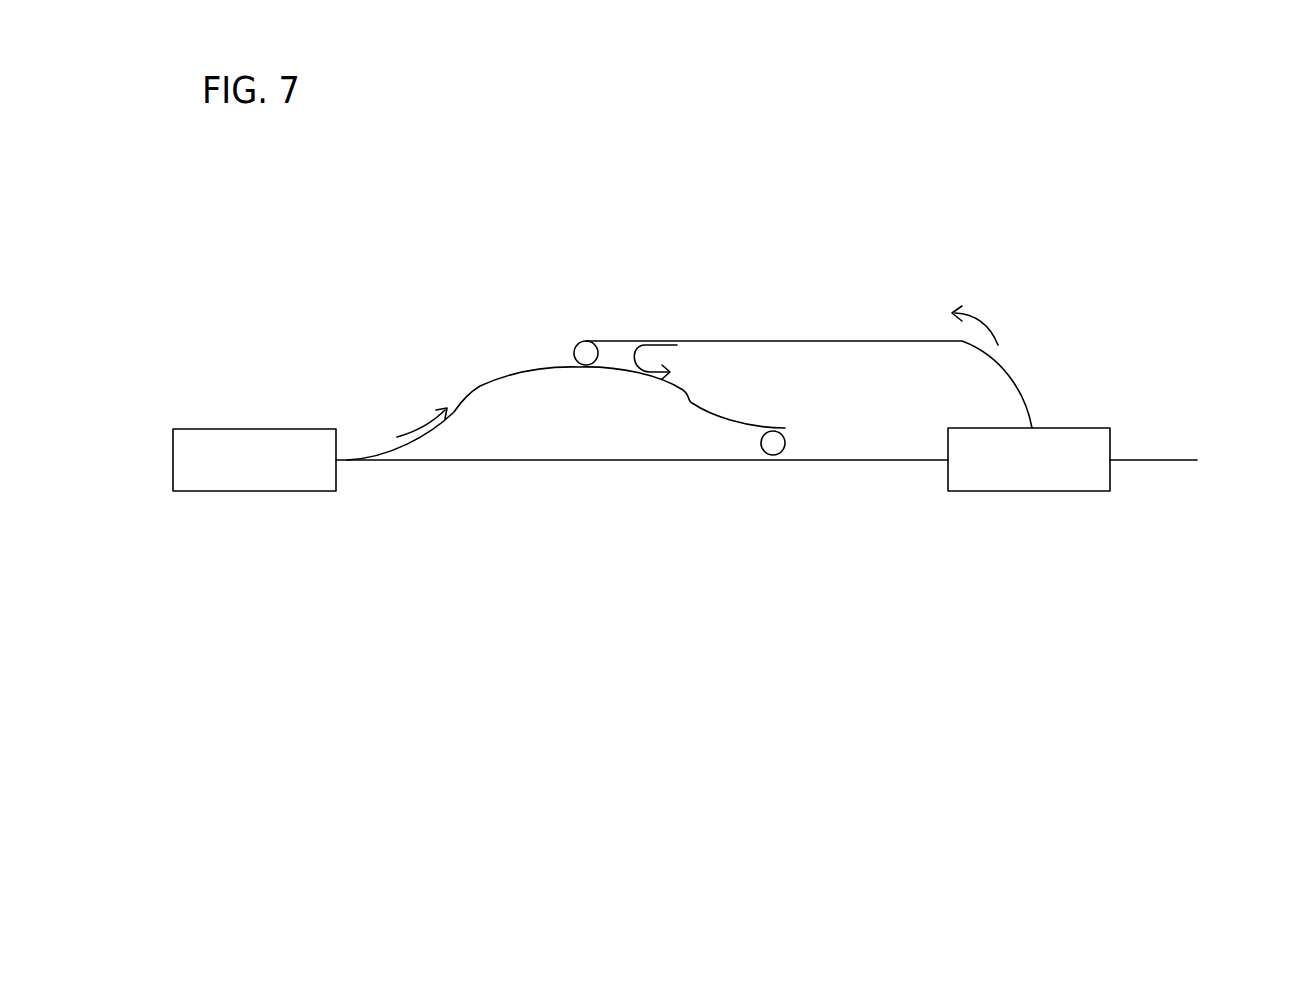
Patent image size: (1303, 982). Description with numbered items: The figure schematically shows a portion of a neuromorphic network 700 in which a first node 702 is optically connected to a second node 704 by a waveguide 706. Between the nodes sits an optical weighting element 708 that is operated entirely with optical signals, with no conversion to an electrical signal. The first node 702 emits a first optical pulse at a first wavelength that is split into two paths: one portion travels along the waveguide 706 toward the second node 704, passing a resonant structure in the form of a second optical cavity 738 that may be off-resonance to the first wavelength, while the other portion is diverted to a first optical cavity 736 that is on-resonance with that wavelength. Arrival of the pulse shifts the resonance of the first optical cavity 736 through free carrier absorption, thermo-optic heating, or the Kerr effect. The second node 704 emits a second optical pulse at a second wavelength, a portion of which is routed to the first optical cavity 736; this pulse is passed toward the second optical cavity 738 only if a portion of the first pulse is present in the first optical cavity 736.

The neuromorphic network 700 is at (745, 600).
The first node 702 is at (238, 491).
The second node 704 is at (1025, 491).
The waveguide 706 is at (575, 461).
The optical weighting element 708 is at (672, 304).
The first optical cavity 736 is at (578, 360).
The second optical cavity 738 is at (787, 447).